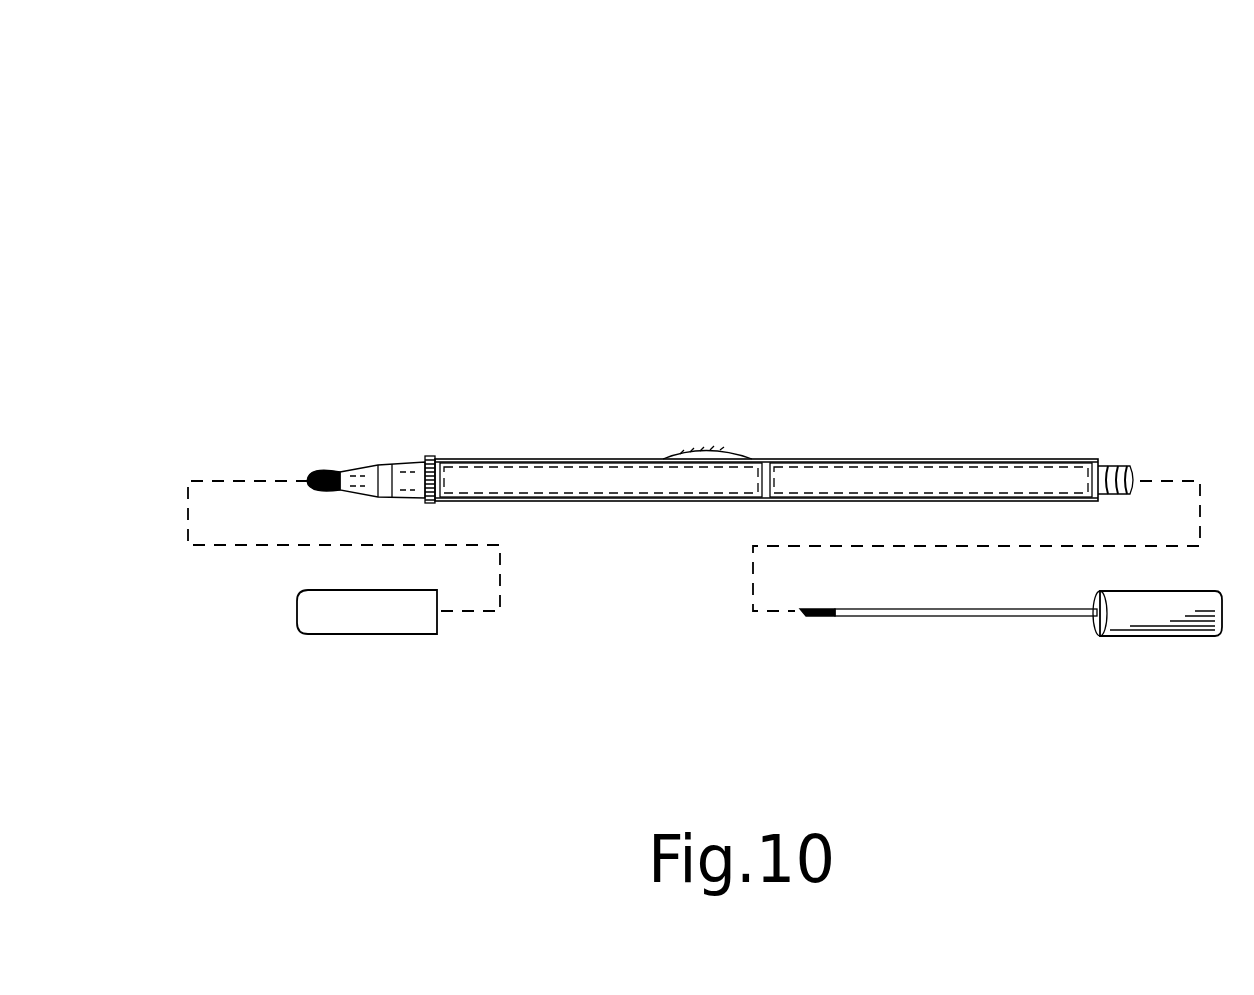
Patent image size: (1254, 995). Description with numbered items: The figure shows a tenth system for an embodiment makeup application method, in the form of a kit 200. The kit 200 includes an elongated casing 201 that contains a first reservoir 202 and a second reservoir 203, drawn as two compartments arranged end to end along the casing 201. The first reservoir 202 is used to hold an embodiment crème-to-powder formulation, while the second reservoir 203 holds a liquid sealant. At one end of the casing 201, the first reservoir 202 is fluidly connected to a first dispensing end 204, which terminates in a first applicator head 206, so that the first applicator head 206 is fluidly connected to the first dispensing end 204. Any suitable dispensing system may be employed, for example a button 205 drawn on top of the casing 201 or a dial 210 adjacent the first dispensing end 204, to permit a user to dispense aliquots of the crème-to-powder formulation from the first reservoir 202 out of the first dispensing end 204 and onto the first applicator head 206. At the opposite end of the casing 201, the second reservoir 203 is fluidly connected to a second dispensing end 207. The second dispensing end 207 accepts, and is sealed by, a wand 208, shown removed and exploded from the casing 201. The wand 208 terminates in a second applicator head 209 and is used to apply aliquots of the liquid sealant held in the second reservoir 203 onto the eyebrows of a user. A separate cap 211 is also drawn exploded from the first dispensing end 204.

The kit 200 is at (752, 212).
The casing 201 is at (683, 501).
The first reservoir 202 is at (594, 466).
The second reservoir 203 is at (942, 466).
The first dispensing end 204 is at (348, 450).
The button 205 is at (721, 440).
The first applicator head 206 is at (322, 468).
The second dispensing end 207 is at (1137, 462).
The wand 208 is at (1052, 632).
The second applicator head 209 is at (818, 617).
The dial 210 is at (430, 462).
The cap 211 is at (358, 614).